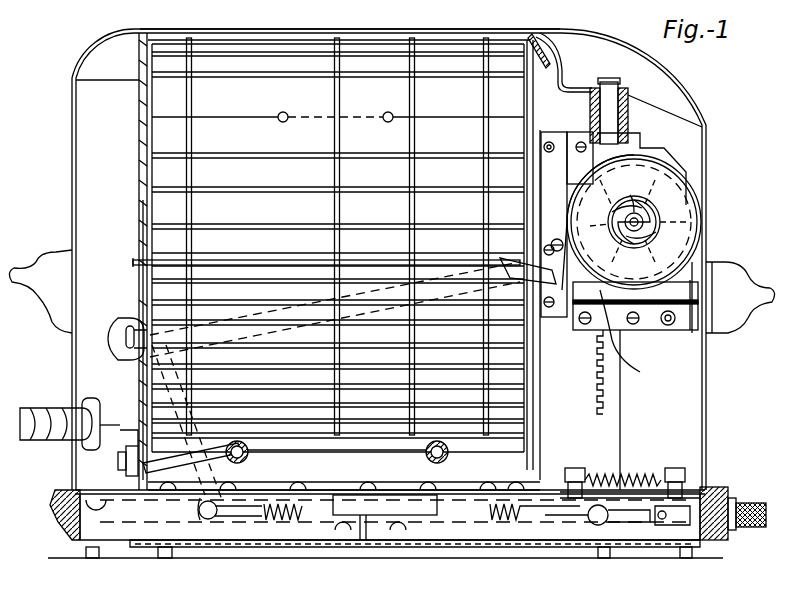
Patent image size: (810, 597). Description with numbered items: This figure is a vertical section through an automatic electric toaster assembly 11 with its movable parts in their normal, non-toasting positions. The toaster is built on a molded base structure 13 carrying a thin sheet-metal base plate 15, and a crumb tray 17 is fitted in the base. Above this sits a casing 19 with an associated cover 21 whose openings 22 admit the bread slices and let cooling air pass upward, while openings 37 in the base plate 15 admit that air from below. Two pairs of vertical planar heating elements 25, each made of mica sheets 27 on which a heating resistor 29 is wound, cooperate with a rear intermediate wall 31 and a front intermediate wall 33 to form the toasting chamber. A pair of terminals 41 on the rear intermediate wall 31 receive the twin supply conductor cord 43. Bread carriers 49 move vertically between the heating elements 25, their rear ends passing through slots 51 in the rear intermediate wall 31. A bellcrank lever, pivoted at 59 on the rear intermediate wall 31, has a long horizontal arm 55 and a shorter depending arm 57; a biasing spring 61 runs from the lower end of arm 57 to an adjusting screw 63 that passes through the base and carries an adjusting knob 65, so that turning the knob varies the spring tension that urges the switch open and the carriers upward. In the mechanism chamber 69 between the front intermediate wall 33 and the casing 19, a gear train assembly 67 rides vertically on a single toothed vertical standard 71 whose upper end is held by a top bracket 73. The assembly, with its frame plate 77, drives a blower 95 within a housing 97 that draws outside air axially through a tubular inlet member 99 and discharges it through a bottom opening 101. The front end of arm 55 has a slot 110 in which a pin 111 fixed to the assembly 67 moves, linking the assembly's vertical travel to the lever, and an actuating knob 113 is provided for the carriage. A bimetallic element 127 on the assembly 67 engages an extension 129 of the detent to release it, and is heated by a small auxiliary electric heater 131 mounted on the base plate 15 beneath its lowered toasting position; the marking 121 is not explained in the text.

The automatic electric toaster assembly 11 is at (748, 173).
The base structure 13 is at (66, 518).
The base plate 15 is at (122, 496).
The crumb tray 17 is at (152, 559).
The casing 19 is at (70, 183).
The cover 21 is at (78, 64).
The openings in the cover 22 is at (445, 33).
The heating elements 25 is at (535, 405).
The sheets of electric insulating material 27 is at (344, 264).
The heating resistor 29 is at (240, 122).
The rear intermediate wall 31 is at (138, 150).
The front intermediate wall 33 is at (530, 108).
The openings in the base plate 37 is at (152, 496).
The terminals 41 is at (118, 464).
The twin supply conductor cord 43 is at (34, 406).
The bread carriers 49 is at (363, 261).
The slots in the rear intermediate wall 51 is at (140, 291).
The long arm of the bellcrank lever 55 is at (274, 342).
The depending arm of the bellcrank lever 57 is at (198, 508).
The pivot of the bellcrank lever 59 is at (126, 352).
The biasing spring 61 is at (264, 514).
The adjusting screw 63 is at (600, 526).
The adjusting knob 65 is at (748, 504).
The gear train assembly 67 is at (670, 151).
The mechanism chamber 69 is at (686, 362).
The vertical standard 71 is at (616, 84).
The top bracket 73 is at (566, 86).
The frame plate 77 is at (556, 136).
The blower 95 is at (650, 222).
The blower housing 97 is at (703, 202).
The tubular inlet member 99 is at (655, 236).
The discharge opening in the housing 101 is at (610, 278).
The slot 110 is at (502, 283).
The pin 111 is at (562, 250).
The actuating knob 113 is at (748, 270).
The escapement 121 is at (630, 194).
The bimetallic element 127 is at (648, 322).
The extension on the detent 129 is at (612, 342).
The auxiliary electric heater 131 is at (632, 476).